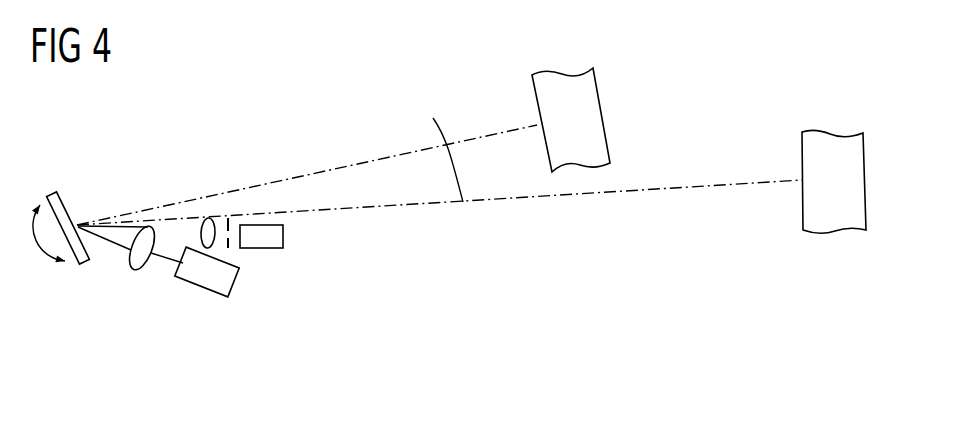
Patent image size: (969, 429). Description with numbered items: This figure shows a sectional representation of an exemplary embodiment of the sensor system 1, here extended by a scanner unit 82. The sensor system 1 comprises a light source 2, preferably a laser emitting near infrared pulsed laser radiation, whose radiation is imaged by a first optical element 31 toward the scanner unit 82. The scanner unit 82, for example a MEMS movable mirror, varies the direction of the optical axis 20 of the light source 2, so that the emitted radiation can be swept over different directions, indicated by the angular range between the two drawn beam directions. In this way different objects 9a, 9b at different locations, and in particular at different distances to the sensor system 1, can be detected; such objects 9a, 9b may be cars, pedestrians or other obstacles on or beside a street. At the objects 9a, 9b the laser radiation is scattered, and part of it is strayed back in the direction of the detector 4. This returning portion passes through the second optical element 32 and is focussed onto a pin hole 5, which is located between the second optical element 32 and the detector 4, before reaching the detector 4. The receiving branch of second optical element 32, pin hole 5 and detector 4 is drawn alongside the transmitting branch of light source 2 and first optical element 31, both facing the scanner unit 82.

The sensor system 1 is at (297, 360).
The light source 2 is at (200, 298).
The detector 4 is at (283, 240).
The pin hole 5 is at (230, 241).
The object 9a is at (590, 102).
The object 9b is at (832, 140).
The optical axis 20 is at (431, 140).
The first optical element 31 is at (137, 270).
The second optical element 32 is at (208, 218).
The scanner unit 82 is at (76, 212).